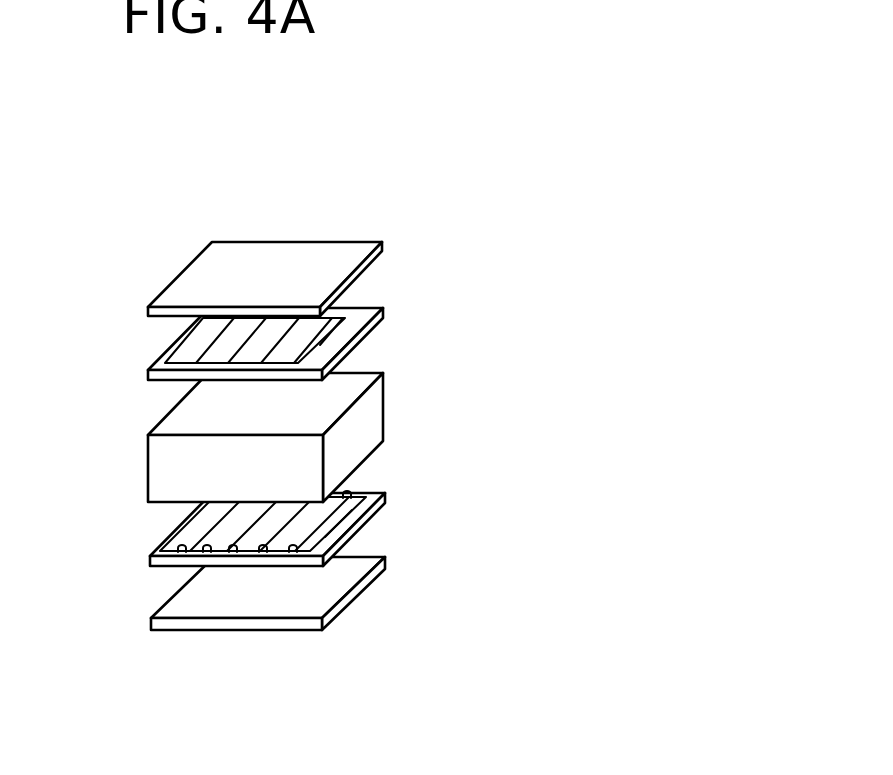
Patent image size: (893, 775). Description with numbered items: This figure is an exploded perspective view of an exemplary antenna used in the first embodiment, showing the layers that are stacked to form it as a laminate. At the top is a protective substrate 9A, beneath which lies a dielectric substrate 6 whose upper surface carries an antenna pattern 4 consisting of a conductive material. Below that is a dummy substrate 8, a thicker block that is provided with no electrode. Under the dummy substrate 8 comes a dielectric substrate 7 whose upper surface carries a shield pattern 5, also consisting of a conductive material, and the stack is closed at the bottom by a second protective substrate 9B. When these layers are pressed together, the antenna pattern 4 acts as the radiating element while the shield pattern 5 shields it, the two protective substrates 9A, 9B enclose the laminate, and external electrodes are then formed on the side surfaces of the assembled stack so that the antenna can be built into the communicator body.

The antenna pattern 4 is at (200, 388).
The shield pattern 5 is at (209, 587).
The dielectric substrate 6 is at (148, 385).
The dielectric substrate 7 is at (148, 567).
The dummy substrate 8 is at (385, 408).
The protective substrate 9A is at (352, 242).
The protective substrate 9B is at (383, 560).